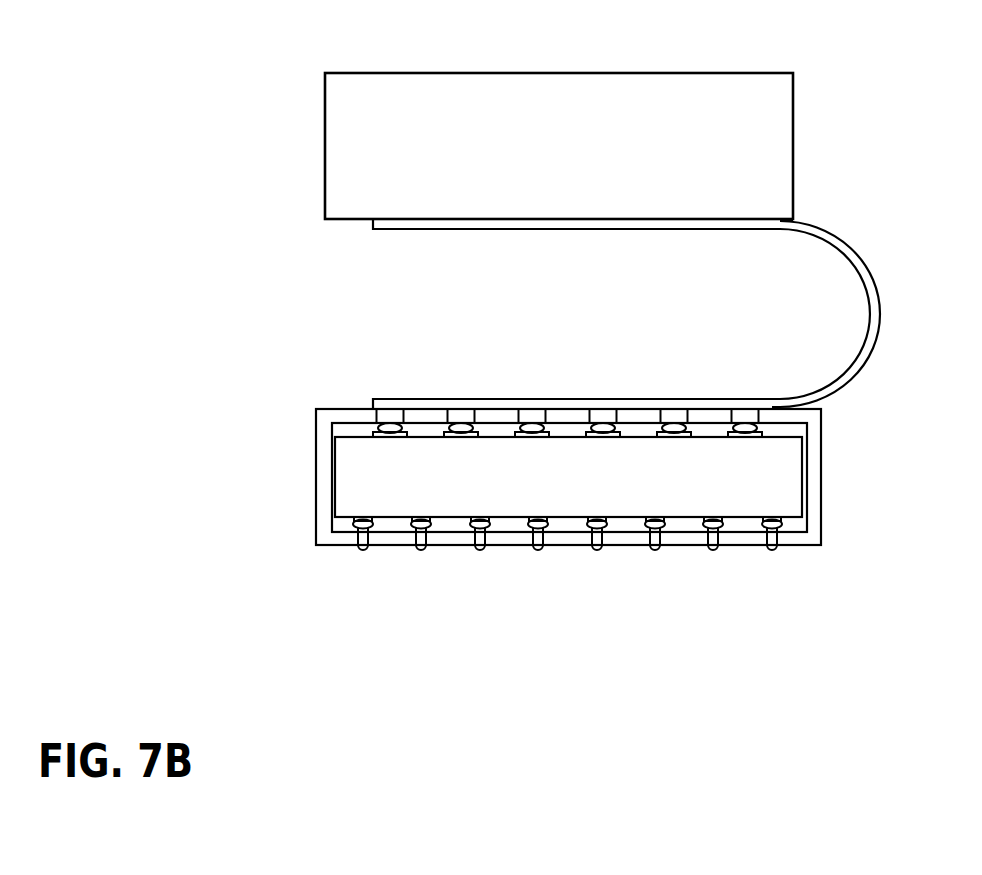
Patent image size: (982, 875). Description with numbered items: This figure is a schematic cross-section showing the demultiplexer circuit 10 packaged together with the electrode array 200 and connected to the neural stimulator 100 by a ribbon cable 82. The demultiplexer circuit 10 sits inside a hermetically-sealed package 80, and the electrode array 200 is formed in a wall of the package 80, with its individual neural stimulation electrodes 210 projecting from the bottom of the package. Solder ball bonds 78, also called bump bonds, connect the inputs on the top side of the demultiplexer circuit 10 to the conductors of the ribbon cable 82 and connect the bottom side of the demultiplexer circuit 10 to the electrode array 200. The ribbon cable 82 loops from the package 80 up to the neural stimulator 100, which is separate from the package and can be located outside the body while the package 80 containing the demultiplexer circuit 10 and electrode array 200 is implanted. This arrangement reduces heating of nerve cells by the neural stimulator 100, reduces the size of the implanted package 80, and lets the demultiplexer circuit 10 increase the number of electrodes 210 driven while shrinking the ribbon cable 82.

The neural stimulator 100 is at (533, 191).
The ribbon cable 82 is at (820, 382).
The hermetically-sealed package 80 is at (506, 476).
The solder ball bonds 78 is at (610, 474).
The demultiplexer circuit 10 is at (580, 506).
The electrode array 200 is at (556, 602).
The neural stimulation electrodes 210 is at (655, 550).